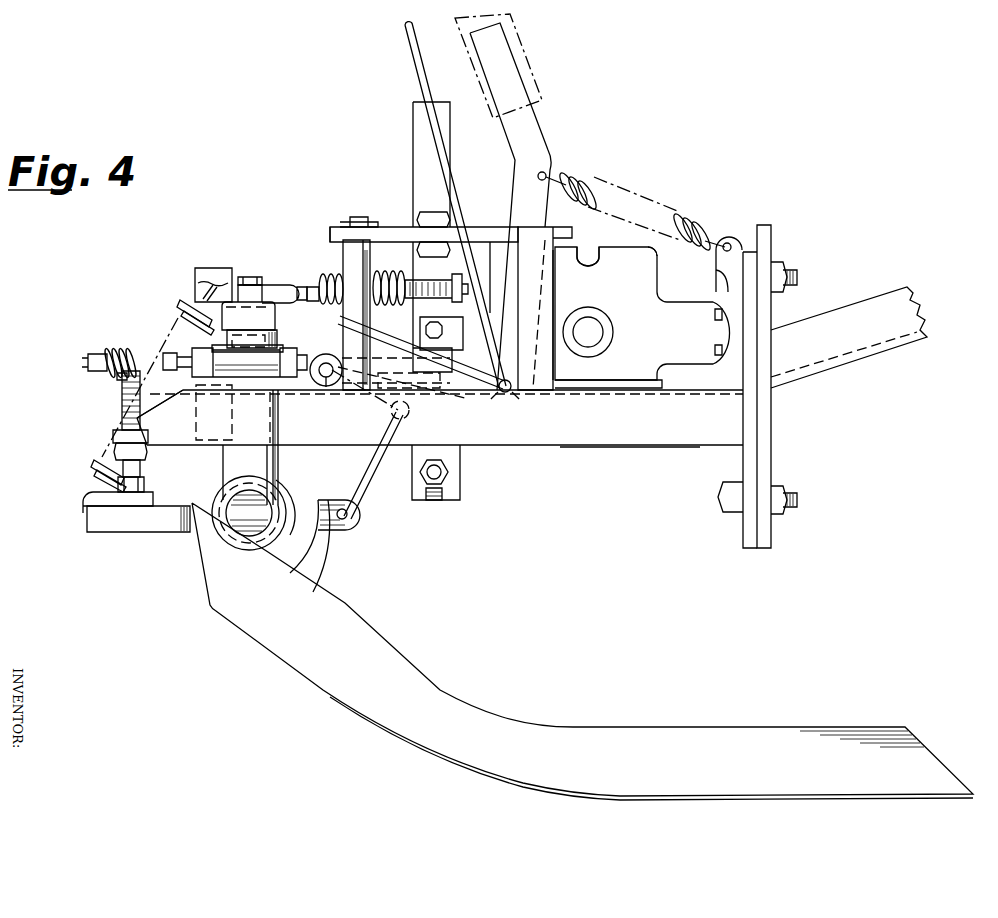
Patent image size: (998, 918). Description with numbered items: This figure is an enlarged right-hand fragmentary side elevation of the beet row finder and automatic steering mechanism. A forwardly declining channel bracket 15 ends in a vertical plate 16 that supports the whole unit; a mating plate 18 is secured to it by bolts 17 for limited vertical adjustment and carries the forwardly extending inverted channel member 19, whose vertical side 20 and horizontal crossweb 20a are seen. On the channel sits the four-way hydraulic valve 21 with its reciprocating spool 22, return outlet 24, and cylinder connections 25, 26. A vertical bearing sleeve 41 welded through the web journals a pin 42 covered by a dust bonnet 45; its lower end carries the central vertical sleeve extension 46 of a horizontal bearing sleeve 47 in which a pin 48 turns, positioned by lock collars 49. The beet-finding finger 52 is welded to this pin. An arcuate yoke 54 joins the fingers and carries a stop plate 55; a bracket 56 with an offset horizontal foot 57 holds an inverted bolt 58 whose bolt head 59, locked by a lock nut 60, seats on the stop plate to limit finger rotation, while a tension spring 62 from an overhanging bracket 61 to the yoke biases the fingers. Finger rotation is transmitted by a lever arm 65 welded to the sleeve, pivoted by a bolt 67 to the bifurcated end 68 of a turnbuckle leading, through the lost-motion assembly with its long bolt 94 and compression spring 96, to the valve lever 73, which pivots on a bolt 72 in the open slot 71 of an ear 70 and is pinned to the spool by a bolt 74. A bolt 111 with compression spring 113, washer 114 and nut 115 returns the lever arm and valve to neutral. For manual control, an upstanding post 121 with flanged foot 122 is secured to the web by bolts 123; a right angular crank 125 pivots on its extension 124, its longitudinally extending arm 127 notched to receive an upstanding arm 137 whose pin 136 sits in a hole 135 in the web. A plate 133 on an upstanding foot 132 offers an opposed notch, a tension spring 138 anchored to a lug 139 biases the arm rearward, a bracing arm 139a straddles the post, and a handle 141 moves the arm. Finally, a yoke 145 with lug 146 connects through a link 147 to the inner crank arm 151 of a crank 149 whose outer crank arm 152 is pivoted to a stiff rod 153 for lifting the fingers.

The channel bracket 15 is at (860, 335).
The vertical plate 16 is at (773, 240).
The bolts 17 is at (798, 276).
The mating plate 18 is at (745, 455).
The inverted channel member 19 is at (563, 450).
The vertical side 20 is at (674, 427).
The horizontal crossweb 20a is at (556, 395).
The four-way hydraulic valve 21 is at (667, 282).
The valve spool 22 is at (418, 327).
The return outlet 24 is at (603, 332).
The cylinder connection 25 is at (578, 250).
The cylinder connection 26 is at (628, 250).
The vertical bearing sleeve 41 is at (279, 452).
The pin 42 is at (272, 420).
The dust bonnet 45 is at (279, 338).
The central vertical sleeve extension 46 is at (224, 470).
The horizontal bearing sleeve 47 is at (292, 500).
The pin 48 is at (263, 524).
The lock collar 49 is at (216, 500).
The beet-finding finger 52 is at (655, 735).
The arcuate yoke 54 is at (140, 525).
The stop plate 55 is at (82, 497).
The bracket 56 is at (184, 434).
The offset horizontal foot 57 is at (115, 440).
The inverted bolt 58 is at (121, 406).
The bolt head 59 is at (147, 484).
The lock nut 60 is at (144, 455).
The overhanging bracket 61 is at (222, 243).
The tension spring 62 is at (187, 309).
The lever arm 65 is at (256, 327).
The bolt 67 is at (250, 277).
The bifurcated end 68 is at (283, 286).
The ear 70 is at (459, 463).
The open slot 71 is at (443, 500).
The bolt 72 is at (418, 480).
The valve lever 73 is at (414, 172).
The bolt 74 is at (438, 328).
The long bolt 94 is at (318, 305).
The compression spring 96 is at (379, 273).
The bolt 111 is at (88, 362).
The compression spring 113 is at (130, 347).
The washer 114 is at (108, 350).
The nut 115 is at (116, 376).
The upstanding post 121 is at (350, 267).
The flanged foot 122 is at (415, 400).
The bolts 123 is at (432, 368).
The extension 124 is at (355, 216).
The right angular crank 125 is at (328, 231).
The longitudinally extending arm 127 is at (392, 232).
The upstanding foot 132 is at (554, 290).
The plate 133 is at (527, 230).
The hole 135 is at (514, 396).
The pin 136 is at (502, 395).
The upstanding arm 137 is at (548, 136).
The tension spring 138 is at (695, 217).
The lug 139 is at (722, 230).
The bracing arm 139a is at (345, 339).
The handle 141 is at (522, 54).
The yoke 145 is at (320, 565).
The lug 146 is at (350, 526).
The link 147 is at (362, 470).
The crank 149 is at (325, 387).
The inner crank arm 151 is at (375, 412).
The outer crank arm 152 is at (380, 362).
The stiff rod 153 is at (410, 68).